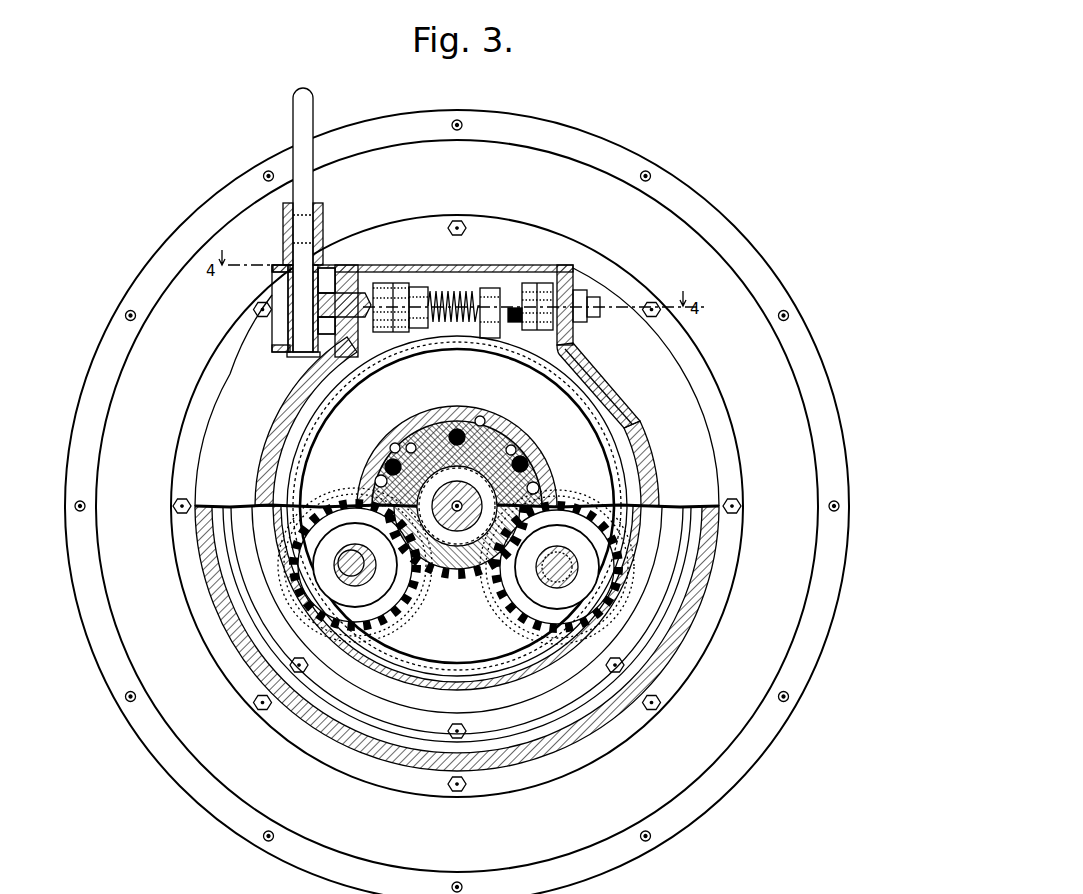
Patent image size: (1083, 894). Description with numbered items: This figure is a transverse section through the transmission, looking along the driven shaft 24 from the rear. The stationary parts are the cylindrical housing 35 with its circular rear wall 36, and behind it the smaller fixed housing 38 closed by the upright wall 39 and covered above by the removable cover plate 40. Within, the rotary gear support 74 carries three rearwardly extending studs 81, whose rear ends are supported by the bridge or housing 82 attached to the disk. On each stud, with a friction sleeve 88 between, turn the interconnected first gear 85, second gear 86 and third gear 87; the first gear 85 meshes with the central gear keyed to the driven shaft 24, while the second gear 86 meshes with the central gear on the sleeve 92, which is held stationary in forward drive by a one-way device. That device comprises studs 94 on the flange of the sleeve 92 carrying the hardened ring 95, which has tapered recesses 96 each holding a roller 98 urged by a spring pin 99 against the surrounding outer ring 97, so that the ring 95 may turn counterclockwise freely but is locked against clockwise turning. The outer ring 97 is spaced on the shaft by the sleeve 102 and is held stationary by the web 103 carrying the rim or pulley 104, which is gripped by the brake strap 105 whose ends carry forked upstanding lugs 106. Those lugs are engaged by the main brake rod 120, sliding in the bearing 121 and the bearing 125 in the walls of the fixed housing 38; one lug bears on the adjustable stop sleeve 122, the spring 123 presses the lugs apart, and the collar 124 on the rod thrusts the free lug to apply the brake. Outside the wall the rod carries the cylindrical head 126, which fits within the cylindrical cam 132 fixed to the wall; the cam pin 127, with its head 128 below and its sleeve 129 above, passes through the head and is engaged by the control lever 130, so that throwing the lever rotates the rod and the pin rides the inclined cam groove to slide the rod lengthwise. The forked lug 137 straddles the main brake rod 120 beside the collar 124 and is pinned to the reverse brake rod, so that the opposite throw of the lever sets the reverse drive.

The control lever 130 is at (303, 114).
The sleeve 129 is at (322, 222).
The forked upstanding lugs 106 is at (437, 288).
The collar 124 is at (393, 283).
The spring 123 is at (486, 288).
The stop sleeve 122 is at (535, 283).
The removable cover plate 40 is at (558, 265).
The bearing 121 is at (582, 289).
The main brake rod 120 is at (598, 298).
The bearing 125 is at (343, 278).
The cylindrical head 126 is at (272, 283).
The cylindrical cam 132 is at (278, 288).
The cam pin 127 is at (300, 322).
The forked lug 137 is at (384, 323).
The head 128 is at (298, 357).
The bridge or housing 82 is at (575, 368).
The rim or pulley 104 is at (592, 393).
The brake strap 105 is at (612, 418).
The cylindrical housing 35 is at (162, 290).
The circular wall 36 is at (446, 506).
The fixed housing 38 is at (283, 404).
The upright closing wall 39 is at (457, 387).
The sleeve 102 is at (442, 477).
The studs 94 is at (457, 429).
The ring 95 is at (481, 416).
The web 103 is at (510, 400).
The outer ring 97 is at (393, 443).
The spring pin 99 is at (395, 458).
The roller 98 is at (385, 463).
The tapered recesses 96 is at (383, 481).
The studs 81 is at (342, 558).
The friction sleeves 88 is at (355, 565).
The driven shaft 24 is at (446, 565).
The sleeve 92 is at (482, 572).
The first gear 85 is at (400, 620).
The rotary gear support 74 is at (453, 638).
The second gear 86 is at (383, 620).
The third gear 87 is at (388, 608).